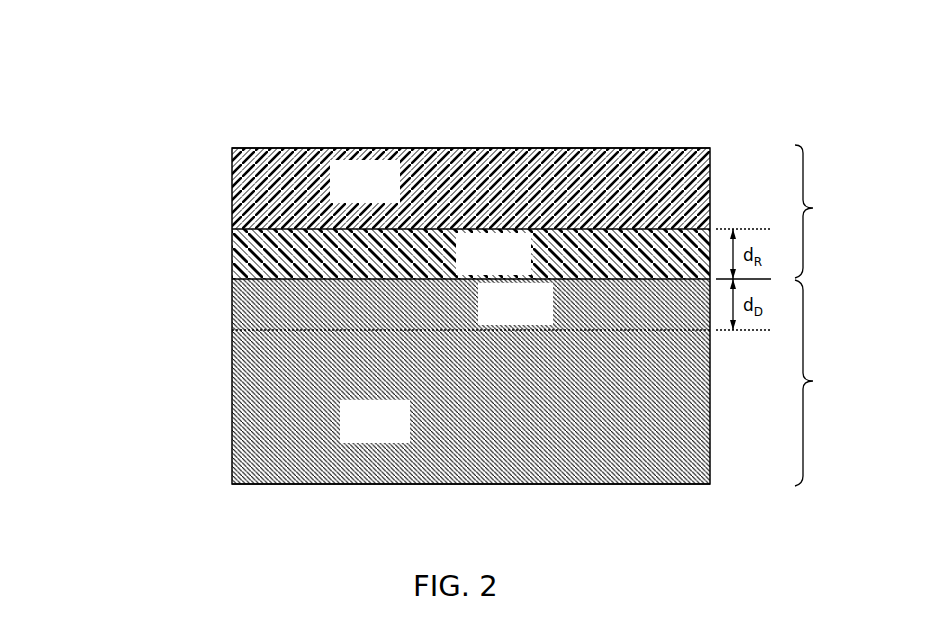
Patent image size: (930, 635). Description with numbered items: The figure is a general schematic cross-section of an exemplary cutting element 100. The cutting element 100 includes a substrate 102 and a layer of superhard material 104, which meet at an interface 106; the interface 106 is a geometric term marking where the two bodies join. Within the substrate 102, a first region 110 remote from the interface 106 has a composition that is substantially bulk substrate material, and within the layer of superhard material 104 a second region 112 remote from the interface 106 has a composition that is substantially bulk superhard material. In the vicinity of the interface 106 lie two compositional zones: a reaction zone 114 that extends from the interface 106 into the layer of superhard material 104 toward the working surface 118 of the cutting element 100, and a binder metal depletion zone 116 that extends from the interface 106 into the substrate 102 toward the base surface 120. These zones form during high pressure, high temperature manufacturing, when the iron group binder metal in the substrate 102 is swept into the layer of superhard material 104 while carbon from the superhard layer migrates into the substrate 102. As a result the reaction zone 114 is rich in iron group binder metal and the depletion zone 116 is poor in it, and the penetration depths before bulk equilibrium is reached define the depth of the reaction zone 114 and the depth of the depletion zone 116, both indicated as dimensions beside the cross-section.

The cutting element 100 is at (382, 259).
The substrate 102 is at (805, 373).
The layer of superhard material 104 is at (805, 200).
The interface 106 is at (224, 271).
The first region 110 is at (347, 422).
The second region 112 is at (337, 186).
The reaction zone 114 is at (465, 256).
The binder metal depletion zone 116 is at (487, 309).
The working surface 118 is at (533, 126).
The base surface 120 is at (588, 488).